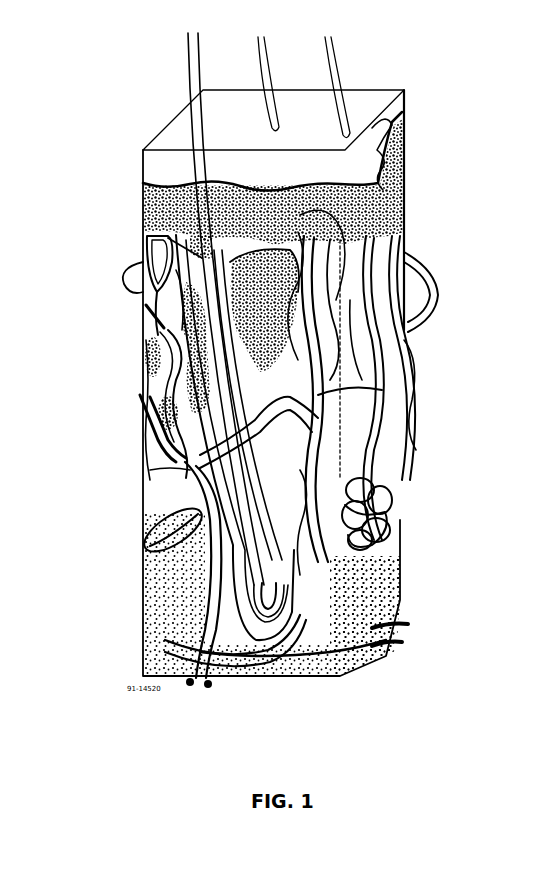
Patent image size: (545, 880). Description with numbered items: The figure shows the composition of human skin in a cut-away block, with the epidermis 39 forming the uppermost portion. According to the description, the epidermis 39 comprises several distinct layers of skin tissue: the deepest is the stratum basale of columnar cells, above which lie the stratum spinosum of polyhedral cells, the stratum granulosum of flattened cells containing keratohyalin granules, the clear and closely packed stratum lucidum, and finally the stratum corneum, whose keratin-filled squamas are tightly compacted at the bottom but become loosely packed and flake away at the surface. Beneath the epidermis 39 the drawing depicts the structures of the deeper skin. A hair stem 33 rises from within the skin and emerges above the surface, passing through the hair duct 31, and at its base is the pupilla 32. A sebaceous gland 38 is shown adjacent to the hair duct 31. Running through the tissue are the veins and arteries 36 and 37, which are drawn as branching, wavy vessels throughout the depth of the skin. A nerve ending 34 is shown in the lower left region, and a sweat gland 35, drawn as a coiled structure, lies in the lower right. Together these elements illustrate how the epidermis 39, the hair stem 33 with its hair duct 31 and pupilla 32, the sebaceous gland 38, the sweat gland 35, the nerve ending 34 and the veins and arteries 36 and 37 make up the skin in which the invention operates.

The hair duct 31 is at (207, 330).
The pupilla 32 is at (287, 592).
The hair stem 33 is at (185, 62).
The nerve ending 34 is at (165, 520).
The sweat gland 35 is at (393, 502).
The veins and arteries 36 is at (180, 480).
The veins and arteries 37 is at (160, 420).
The sebaceous gland 38 is at (200, 262).
The epidermis 39 is at (407, 113).